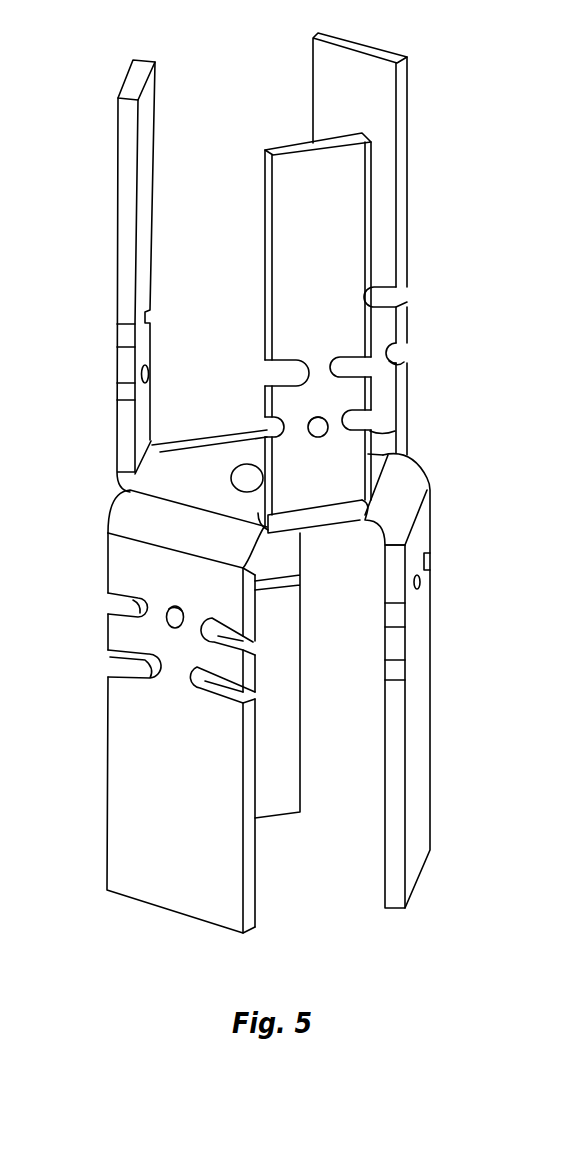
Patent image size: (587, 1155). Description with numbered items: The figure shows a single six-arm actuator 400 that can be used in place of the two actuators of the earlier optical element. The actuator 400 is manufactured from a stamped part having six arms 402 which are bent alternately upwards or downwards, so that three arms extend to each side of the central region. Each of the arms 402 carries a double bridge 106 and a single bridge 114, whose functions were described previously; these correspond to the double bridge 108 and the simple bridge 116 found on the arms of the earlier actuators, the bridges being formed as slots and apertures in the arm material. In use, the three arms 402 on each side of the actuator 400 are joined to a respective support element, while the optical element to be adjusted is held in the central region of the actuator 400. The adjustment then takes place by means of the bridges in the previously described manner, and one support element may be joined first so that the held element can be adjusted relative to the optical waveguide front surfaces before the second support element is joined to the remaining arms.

The actuator 400 is at (423, 452).
The arm 402 is at (125, 235).
The simple bridge 116 is at (313, 356).
The single bridge 114 is at (416, 297).
The double bridge 106 is at (409, 352).
The double bridge 108 is at (325, 452).